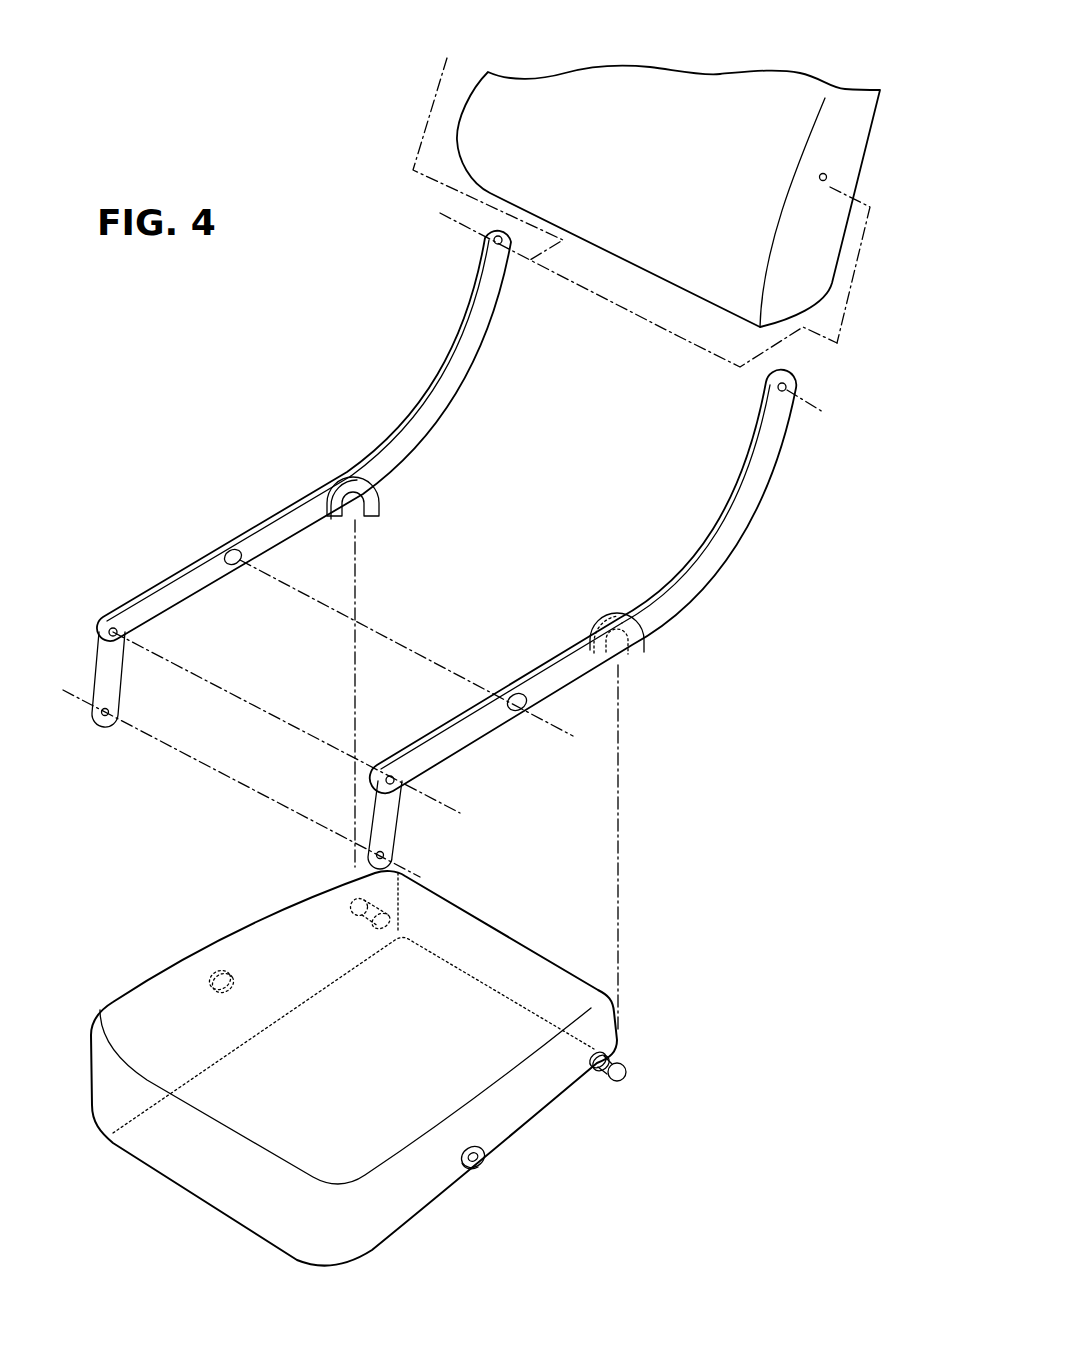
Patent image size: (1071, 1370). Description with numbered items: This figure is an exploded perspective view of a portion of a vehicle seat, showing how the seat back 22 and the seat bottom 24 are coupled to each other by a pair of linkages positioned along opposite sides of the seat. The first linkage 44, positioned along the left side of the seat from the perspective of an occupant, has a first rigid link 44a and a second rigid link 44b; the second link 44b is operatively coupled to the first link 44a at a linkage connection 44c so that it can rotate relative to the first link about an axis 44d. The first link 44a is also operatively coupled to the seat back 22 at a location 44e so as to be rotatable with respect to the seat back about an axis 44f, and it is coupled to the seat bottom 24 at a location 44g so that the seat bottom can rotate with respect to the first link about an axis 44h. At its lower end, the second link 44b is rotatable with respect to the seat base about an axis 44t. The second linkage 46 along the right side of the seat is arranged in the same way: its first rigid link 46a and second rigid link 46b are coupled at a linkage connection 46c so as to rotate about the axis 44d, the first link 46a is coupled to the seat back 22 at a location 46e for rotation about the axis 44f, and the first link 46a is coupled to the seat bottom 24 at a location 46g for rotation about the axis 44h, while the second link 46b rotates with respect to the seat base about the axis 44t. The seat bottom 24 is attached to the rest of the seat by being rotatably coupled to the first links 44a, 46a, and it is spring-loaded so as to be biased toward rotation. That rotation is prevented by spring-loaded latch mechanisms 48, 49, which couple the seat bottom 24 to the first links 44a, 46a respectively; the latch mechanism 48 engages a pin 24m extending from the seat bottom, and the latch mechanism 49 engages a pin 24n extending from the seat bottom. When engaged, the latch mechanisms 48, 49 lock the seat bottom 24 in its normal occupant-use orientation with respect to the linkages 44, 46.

The seat back 22 is at (505, 123).
The seat bottom 24 is at (209, 1176).
The pin 24m is at (628, 1070).
The pin 24n is at (352, 915).
The first linkage 44 is at (545, 627).
The first rigid link 44a is at (750, 472).
The second rigid link 44b is at (380, 840).
The linkage connection 44c is at (373, 790).
The axis 44d is at (207, 680).
The location 44e is at (782, 389).
The axis 44f is at (681, 338).
The location 44g is at (513, 693).
The axis 44h is at (367, 630).
The axis 44t is at (197, 757).
The second linkage 46 is at (268, 489).
The first rigid link 46a is at (467, 328).
The second rigid link 46b is at (103, 698).
The linkage connection 46c is at (93, 647).
The location 46e is at (497, 242).
The location 46g is at (230, 547).
The latch mechanism 48 is at (643, 650).
The latch mechanism 49 is at (373, 497).